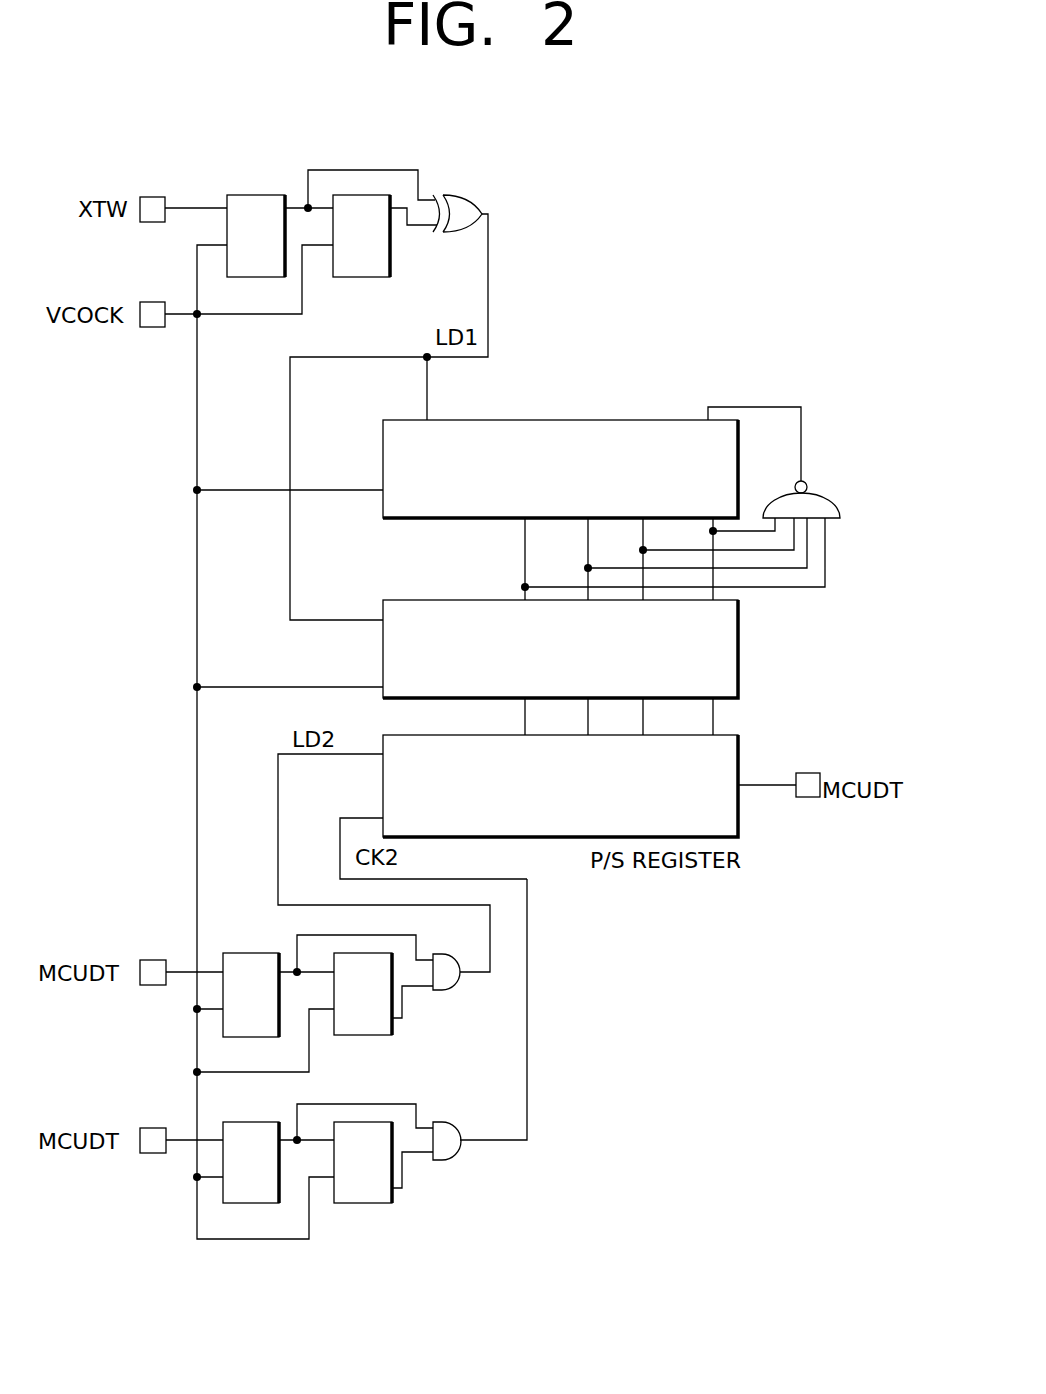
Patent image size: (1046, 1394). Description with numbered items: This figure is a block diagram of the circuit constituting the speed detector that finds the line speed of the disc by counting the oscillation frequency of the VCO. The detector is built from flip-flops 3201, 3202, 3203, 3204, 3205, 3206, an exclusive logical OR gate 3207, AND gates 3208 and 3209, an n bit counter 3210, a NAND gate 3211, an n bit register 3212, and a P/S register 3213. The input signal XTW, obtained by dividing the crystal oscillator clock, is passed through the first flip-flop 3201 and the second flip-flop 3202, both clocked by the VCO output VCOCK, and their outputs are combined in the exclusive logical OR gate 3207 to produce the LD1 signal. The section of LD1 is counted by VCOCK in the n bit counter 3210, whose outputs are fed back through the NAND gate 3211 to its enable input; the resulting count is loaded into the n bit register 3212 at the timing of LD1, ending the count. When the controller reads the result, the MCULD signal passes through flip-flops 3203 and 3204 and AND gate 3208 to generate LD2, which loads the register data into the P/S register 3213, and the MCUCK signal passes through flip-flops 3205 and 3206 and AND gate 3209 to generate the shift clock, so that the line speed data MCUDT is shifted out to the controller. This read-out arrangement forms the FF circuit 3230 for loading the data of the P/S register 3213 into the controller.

The flip-flop 3201 is at (260, 195).
The flip-flop 3202 is at (365, 195).
The flip-flop 3203 is at (233, 1028).
The flip-flop 3204 is at (354, 1036).
The flip-flop 3205 is at (248, 1197).
The flip-flop 3206 is at (352, 1197).
The exclusive logical OR gate 3207 is at (458, 197).
The AND gate 3208 is at (448, 980).
The AND gate 3209 is at (457, 1165).
The n bit counter 3210 is at (668, 430).
The NAND gate 3211 is at (808, 497).
The n bit register 3212 is at (738, 665).
The P/S register 3213 is at (573, 832).
The FF circuit 3230 is at (500, 1110).